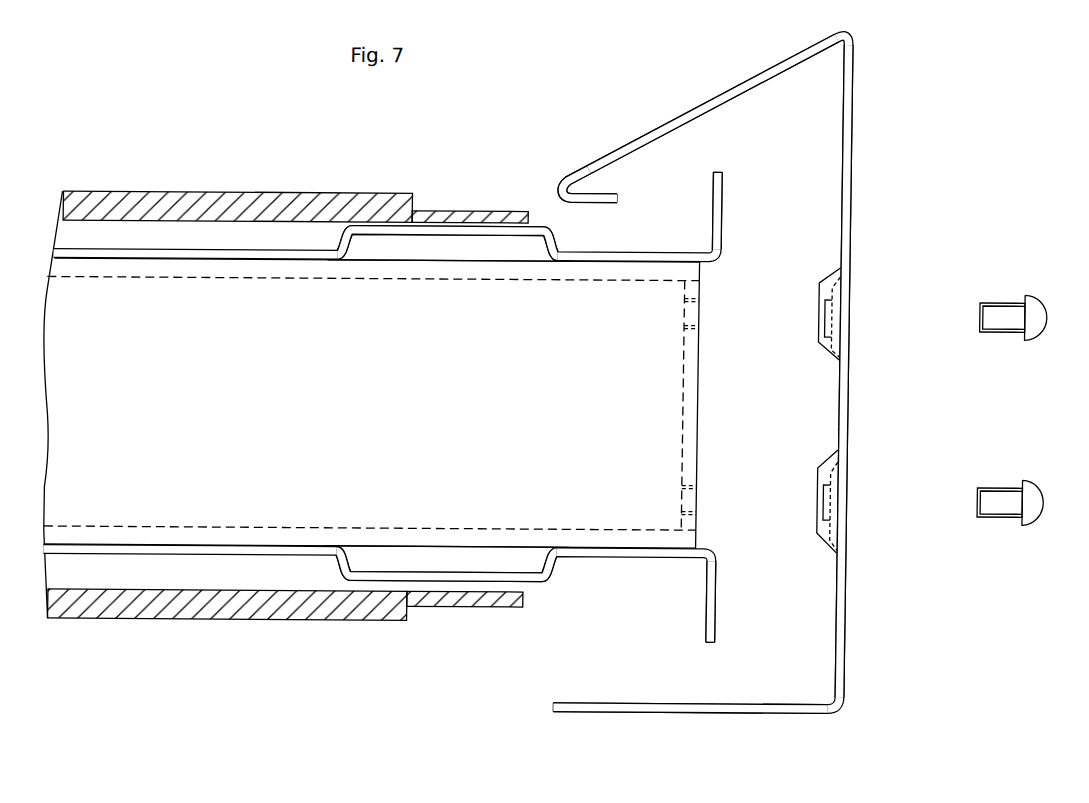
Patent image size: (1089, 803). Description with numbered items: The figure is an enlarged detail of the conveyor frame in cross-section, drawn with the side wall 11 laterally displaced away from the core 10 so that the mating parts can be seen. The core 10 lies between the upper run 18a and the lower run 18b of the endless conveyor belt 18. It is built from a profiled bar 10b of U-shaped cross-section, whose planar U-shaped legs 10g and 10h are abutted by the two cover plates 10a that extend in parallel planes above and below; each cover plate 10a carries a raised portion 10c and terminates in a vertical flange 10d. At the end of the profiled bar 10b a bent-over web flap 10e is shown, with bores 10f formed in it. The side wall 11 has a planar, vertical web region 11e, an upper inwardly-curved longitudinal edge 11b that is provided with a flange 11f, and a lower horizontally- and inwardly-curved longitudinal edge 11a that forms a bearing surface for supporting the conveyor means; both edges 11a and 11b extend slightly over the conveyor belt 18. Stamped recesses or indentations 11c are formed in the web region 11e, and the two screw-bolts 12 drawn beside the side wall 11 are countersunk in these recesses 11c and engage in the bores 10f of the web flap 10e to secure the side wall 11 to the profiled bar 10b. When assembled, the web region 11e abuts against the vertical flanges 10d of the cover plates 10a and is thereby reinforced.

The core 10 is at (628, 567).
The cover plate 10a is at (245, 249).
The profiled bar 10b is at (302, 395).
The raised rib portion 10c is at (457, 228).
The vertical flange 10d is at (717, 205).
The web flap 10e is at (693, 409).
The bore 10f is at (693, 312).
The U-shaped leg 10g is at (192, 262).
The U-shaped leg 10h is at (144, 534).
The side wall 11 is at (765, 406).
The lower longitudinal edge 11a is at (796, 709).
The upper longitudinal edge 11b is at (674, 116).
The stamped recess 11c is at (833, 308).
The web region 11e is at (853, 419).
The flange 11f is at (599, 196).
The screw-bolt 12 is at (999, 317).
The conveyor belt 18 is at (287, 407).
The upper run 18a is at (130, 208).
The lower run 18b is at (297, 612).